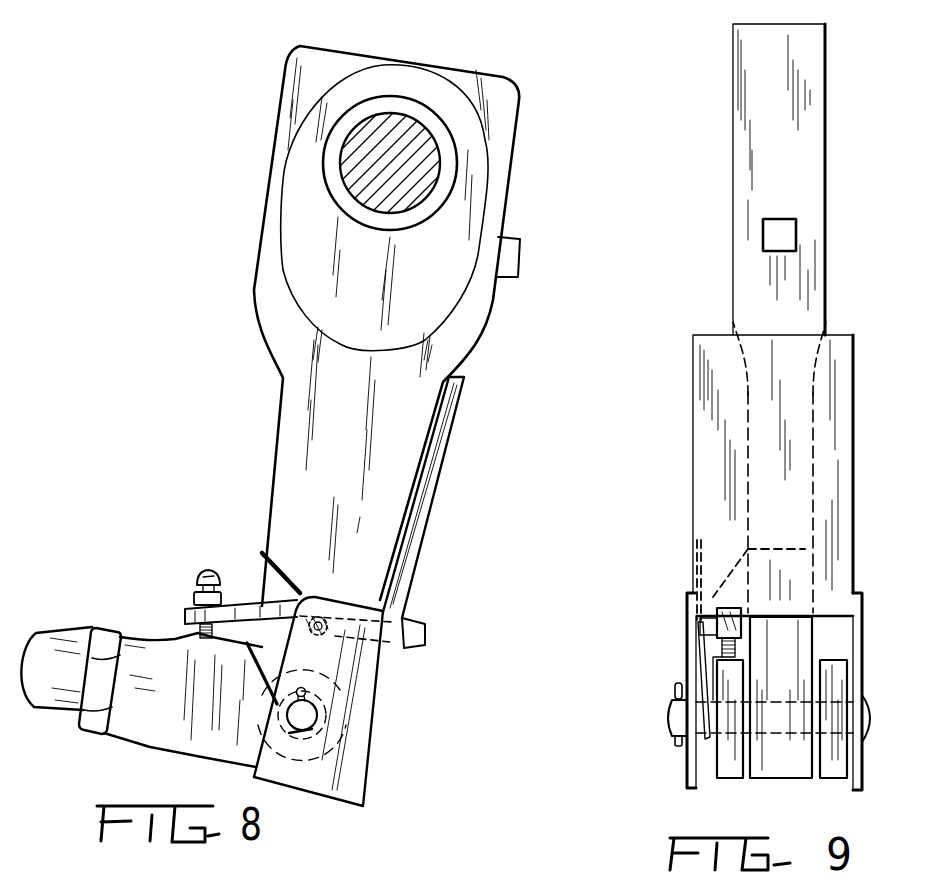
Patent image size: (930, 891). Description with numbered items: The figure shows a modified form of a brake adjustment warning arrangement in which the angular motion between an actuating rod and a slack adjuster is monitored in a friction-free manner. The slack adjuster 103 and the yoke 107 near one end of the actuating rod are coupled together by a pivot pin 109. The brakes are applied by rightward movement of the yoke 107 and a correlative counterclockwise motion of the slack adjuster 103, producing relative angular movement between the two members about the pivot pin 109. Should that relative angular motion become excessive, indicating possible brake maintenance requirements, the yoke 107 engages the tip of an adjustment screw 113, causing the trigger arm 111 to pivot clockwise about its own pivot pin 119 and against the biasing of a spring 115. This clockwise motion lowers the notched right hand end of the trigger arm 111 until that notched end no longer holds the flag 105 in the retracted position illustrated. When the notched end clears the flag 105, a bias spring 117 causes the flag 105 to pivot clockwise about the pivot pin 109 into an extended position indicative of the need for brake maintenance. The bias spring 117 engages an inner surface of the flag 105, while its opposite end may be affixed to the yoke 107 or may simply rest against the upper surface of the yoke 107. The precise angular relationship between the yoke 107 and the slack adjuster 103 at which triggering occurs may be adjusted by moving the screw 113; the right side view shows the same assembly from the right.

In FIG. 8, the slack adjuster 103 is at (478, 302).
In FIG. 9, the slack adjuster 103 is at (805, 288).
In FIG. 8, the flag 105 is at (430, 507).
In FIG. 9, the flag 105 is at (725, 421).
In FIG. 8, the yoke 107 is at (185, 725).
In FIG. 9, the yoke 107 is at (832, 770).
In FIG. 8, the pivot pin 109 is at (313, 728).
In FIG. 9, the pivot pin 109 is at (666, 718).
In FIG. 8, the trigger arm 111 is at (420, 612).
In FIG. 9, the trigger arm 111 is at (730, 617).
In FIG. 8, the adjustment screw 113 is at (207, 571).
In FIG. 8, the spring 115 is at (280, 563).
In FIG. 9, the spring 115 is at (728, 573).
In FIG. 8, the bias spring 117 is at (350, 702).
In FIG. 9, the bias spring 117 is at (708, 740).
In FIG. 8, the pivot pin 119 is at (324, 636).